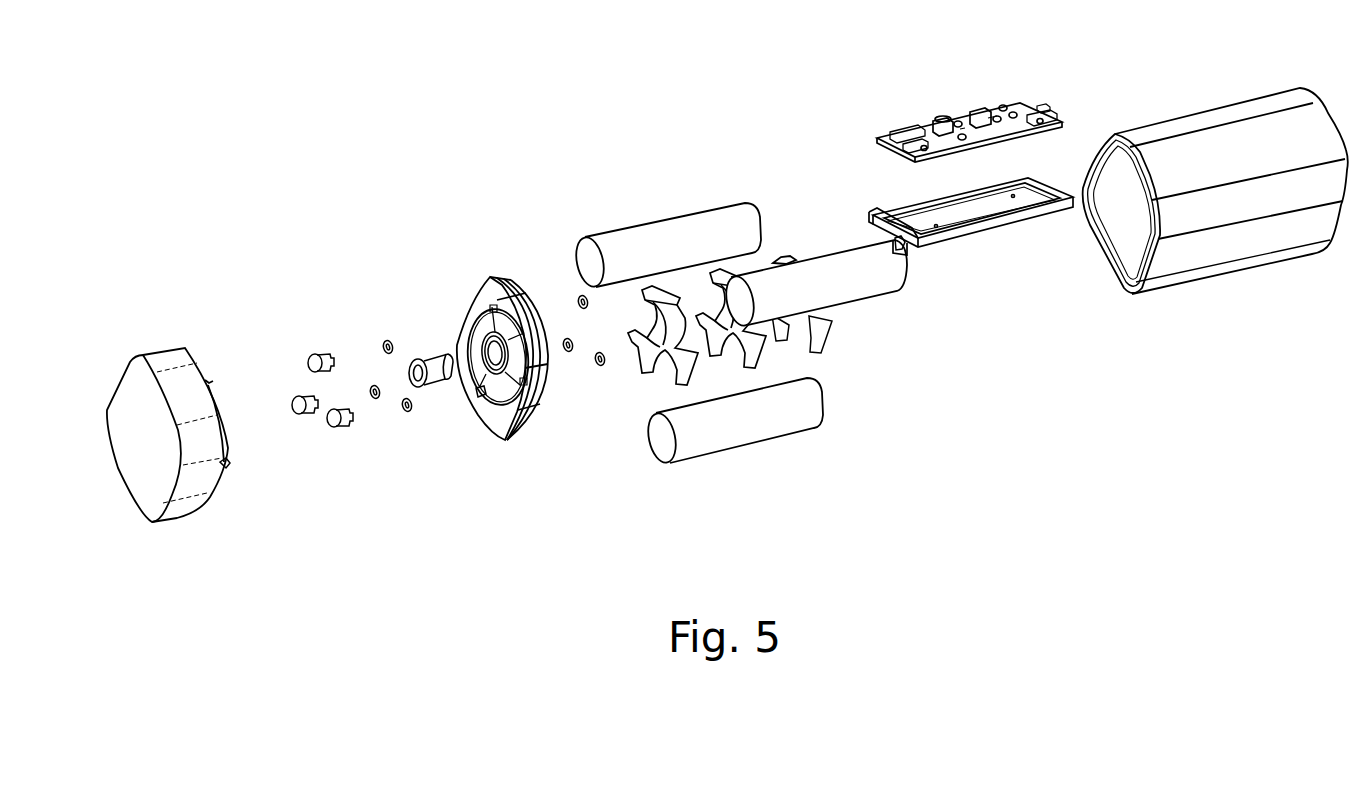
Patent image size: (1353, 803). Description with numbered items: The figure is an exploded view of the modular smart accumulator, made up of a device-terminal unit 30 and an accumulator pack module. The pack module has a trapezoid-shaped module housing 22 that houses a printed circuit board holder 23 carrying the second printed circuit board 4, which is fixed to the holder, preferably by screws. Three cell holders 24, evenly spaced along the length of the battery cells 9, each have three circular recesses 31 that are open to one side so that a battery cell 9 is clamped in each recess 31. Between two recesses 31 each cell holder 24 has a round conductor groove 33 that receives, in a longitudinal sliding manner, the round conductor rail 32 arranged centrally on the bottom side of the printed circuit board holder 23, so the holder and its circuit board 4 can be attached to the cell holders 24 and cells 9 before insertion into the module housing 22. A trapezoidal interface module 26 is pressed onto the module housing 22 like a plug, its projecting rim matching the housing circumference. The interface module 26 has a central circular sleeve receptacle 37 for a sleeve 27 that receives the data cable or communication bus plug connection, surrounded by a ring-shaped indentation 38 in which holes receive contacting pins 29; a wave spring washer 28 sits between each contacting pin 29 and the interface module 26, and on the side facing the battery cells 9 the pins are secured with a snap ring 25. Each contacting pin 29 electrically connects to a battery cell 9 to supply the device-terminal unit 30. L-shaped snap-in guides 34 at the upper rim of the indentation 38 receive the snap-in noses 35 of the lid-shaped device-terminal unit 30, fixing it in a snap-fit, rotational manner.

The second printed circuit board 4 is at (955, 112).
The battery cell 9 is at (779, 450).
The module housing 22 is at (1242, 266).
The printed circuit board holder 23 is at (992, 232).
The cell holder 24 is at (631, 368).
The snap ring 25 is at (578, 295).
The interface module 26 is at (468, 300).
The sleeve 27 is at (438, 392).
The wave spring washer 28 is at (382, 340).
The contacting pin 29 is at (336, 432).
The device-terminal unit 30 is at (113, 385).
The circular recess 31 is at (733, 352).
The conductor rail 32 is at (912, 250).
The conductor groove 33 is at (672, 290).
The snap-in guide 34 is at (480, 408).
The snap-in nose 35 is at (232, 470).
The circular sleeve receptacle 37 is at (482, 352).
The ring-shaped indentation 38 is at (500, 330).